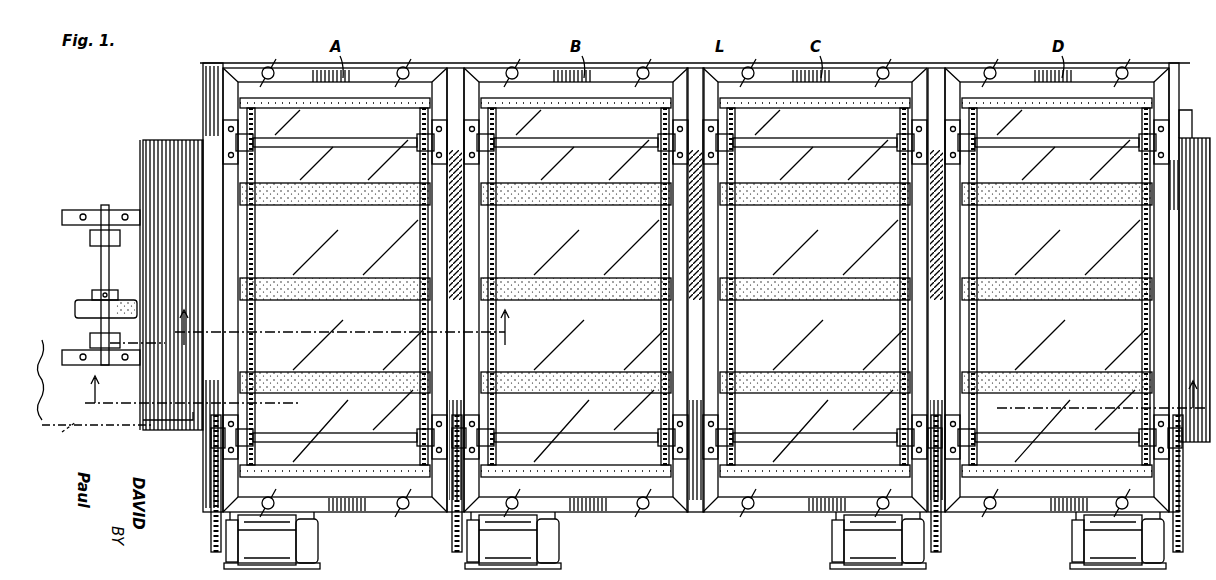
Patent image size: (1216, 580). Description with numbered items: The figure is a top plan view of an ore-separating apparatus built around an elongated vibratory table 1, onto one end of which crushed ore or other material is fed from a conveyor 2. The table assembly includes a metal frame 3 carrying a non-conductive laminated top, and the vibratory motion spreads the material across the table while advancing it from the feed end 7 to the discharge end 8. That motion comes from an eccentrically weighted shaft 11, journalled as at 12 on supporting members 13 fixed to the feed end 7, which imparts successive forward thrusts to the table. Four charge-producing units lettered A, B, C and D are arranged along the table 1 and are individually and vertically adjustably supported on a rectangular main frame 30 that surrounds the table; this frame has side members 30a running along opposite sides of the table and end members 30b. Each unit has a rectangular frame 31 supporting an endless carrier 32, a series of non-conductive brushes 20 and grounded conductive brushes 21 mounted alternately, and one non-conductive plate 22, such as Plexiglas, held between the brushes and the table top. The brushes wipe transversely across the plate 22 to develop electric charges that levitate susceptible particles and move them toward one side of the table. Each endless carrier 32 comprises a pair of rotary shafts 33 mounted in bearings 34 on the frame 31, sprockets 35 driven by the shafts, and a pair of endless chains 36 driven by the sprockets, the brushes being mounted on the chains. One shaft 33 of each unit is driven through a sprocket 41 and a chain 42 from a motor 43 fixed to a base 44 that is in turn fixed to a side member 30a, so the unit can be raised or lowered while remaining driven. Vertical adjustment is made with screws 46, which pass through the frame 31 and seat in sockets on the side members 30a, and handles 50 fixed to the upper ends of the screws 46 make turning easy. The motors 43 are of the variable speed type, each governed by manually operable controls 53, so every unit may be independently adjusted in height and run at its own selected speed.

The vibratory table 1 is at (154, 142).
The conveyor 2 is at (628, 411).
The metal frame 3 is at (318, 327).
The feed end 7 is at (156, 182).
The discharge end 8 is at (1196, 138).
The shaft 11 is at (102, 260).
The journal 12 is at (88, 364).
The supporting members 13 is at (60, 352).
The non-conductive brushes 20 is at (302, 177).
The conductive brushes 21 is at (314, 100).
The plates 22 is at (722, 291).
The main frame 30 is at (458, 66).
The side members 30a is at (658, 66).
The end members 30b is at (200, 82).
The rectangular frame 31 is at (412, 67).
The endless carrier 32 is at (258, 246).
The rotary shafts 33 is at (338, 144).
The bearings 34 is at (231, 130).
The sprockets 35 is at (428, 125).
The endless chains 36 is at (418, 244).
The sprocket 41 is at (211, 432).
The chain 42 is at (209, 471).
The motor 43 is at (543, 540).
The base 44 is at (316, 564).
The screws 46 is at (269, 66).
The handles 50 is at (278, 68).
The manually operable controls 53 is at (213, 548).